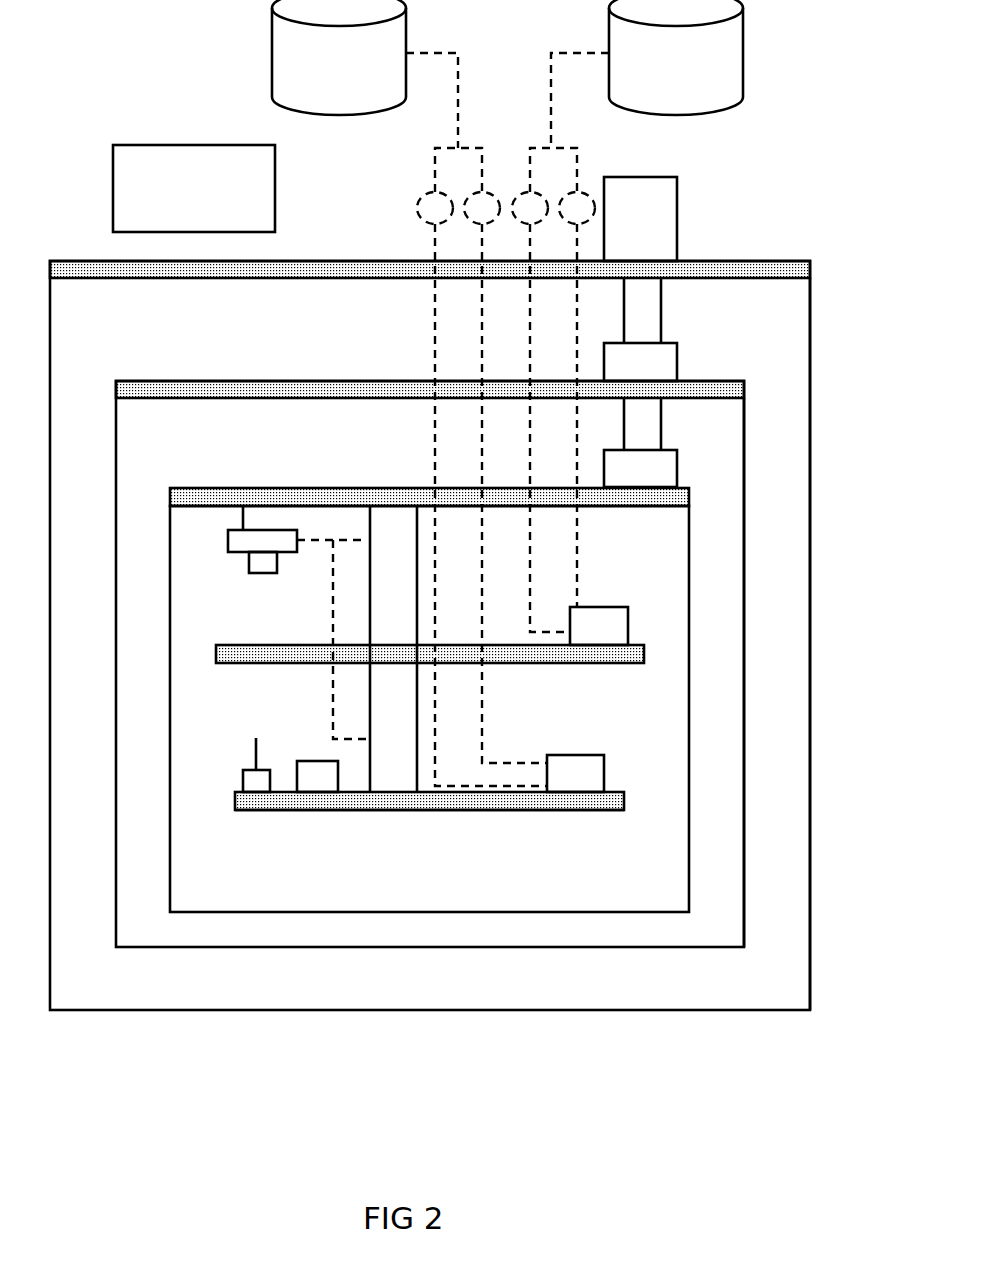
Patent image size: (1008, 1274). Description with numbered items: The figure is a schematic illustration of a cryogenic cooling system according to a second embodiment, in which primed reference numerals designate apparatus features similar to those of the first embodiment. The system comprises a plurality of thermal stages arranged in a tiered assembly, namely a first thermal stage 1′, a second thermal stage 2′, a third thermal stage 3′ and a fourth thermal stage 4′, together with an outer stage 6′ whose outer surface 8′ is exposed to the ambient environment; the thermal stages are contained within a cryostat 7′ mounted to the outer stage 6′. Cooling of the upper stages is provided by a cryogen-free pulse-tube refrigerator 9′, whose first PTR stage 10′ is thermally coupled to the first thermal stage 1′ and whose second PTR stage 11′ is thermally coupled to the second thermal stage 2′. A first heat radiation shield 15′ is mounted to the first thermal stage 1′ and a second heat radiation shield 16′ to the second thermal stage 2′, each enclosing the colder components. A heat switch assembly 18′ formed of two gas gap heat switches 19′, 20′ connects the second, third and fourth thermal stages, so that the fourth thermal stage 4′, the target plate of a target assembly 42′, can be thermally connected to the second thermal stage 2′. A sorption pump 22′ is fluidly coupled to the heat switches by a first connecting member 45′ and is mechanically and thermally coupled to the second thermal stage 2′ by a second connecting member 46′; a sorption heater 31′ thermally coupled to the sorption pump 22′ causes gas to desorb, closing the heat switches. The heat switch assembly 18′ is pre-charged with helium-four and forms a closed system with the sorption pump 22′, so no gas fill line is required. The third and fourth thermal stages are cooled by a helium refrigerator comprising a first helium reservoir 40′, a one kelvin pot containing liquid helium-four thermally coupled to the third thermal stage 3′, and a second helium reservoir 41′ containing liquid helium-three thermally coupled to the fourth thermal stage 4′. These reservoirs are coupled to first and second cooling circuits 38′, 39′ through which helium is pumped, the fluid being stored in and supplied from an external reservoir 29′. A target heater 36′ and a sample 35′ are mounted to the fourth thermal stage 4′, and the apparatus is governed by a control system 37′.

The first thermal stage 1′ is at (709, 391).
The second thermal stage 2′ is at (620, 499).
The third thermal stage 3′ is at (595, 655).
The fourth thermal stage 4′ is at (584, 809).
The outer stage 6′ is at (777, 270).
The cryostat 7′ is at (813, 513).
The outer surface 8′ is at (705, 262).
The pulse-tube refrigerator 9′ is at (651, 230).
The first PTR stage 10′ is at (654, 376).
The second PTR stage 11′ is at (654, 482).
The first heat radiation shield 15′ is at (748, 454).
The second heat radiation shield 16′ is at (693, 567).
The heat switch assembly 18′ is at (347, 623).
The gas gap heat switch 19′ is at (410, 590).
The gas gap heat switch 20′ is at (410, 740).
The sorption pump 22′ is at (243, 540).
The external reservoir 29′ is at (692, 75).
The sorption heater 31′ is at (263, 562).
The sample 35′ is at (334, 790).
The target heater 36′ is at (259, 750).
The control system 37′ is at (212, 201).
The first cooling circuit 38′ is at (588, 330).
The second cooling circuit 39′ is at (423, 365).
The first helium reservoir 40′ is at (613, 640).
The second helium reservoir 41′ is at (589, 790).
The target assembly 42′ is at (309, 820).
The first connecting member 45′ is at (320, 545).
The second connecting member 46′ is at (241, 521).